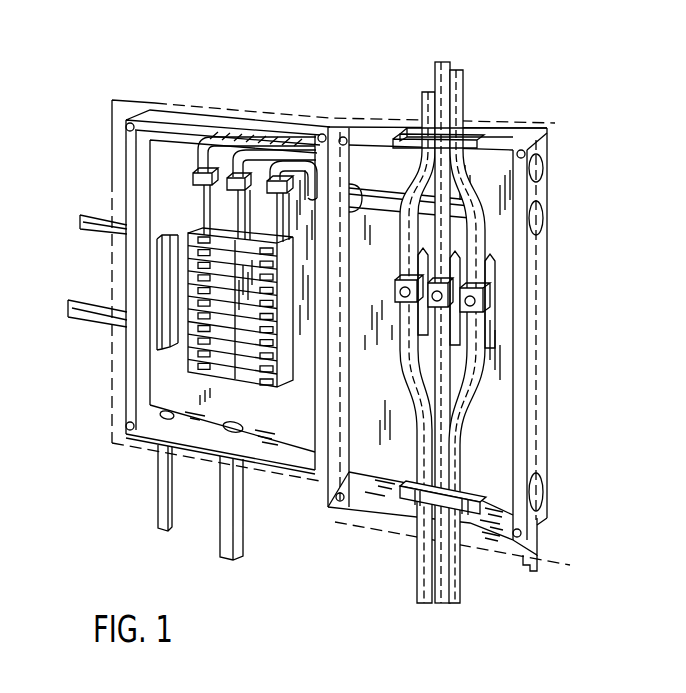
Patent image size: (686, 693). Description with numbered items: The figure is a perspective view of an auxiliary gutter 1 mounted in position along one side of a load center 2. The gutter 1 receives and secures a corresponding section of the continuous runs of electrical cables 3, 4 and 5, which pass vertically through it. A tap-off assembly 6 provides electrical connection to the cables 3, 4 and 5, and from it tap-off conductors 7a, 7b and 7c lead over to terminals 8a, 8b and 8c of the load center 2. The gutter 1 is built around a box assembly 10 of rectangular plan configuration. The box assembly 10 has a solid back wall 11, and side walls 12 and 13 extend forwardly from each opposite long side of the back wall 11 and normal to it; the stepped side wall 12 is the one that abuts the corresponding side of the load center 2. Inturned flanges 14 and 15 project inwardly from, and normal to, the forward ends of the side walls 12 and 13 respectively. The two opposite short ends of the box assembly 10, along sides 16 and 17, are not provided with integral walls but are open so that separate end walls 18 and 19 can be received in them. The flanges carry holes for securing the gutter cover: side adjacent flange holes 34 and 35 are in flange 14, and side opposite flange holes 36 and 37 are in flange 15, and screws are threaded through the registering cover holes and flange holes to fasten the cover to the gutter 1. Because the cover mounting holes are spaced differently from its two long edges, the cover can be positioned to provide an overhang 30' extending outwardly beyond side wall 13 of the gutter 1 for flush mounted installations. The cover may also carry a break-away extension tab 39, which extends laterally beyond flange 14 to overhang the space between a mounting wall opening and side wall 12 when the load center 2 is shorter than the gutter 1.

The auxiliary gutter 1 is at (556, 366).
The load center 2 is at (118, 159).
The electrical cable 3 is at (463, 87).
The electrical cable 4 is at (446, 65).
The electrical cable 5 is at (425, 92).
The tap-off assembly 6 is at (494, 289).
The tap-off conductor 7a is at (198, 152).
The tap-off conductor 7b is at (233, 160).
The tap-off conductor 7c is at (273, 165).
The terminal 8a is at (197, 185).
The terminal 8b is at (233, 190).
The terminal 8c is at (278, 197).
The box assembly 10 is at (549, 447).
The back wall 11 is at (545, 133).
The side wall 12 is at (322, 128).
The side wall 13 is at (545, 129).
The inturned flange 14 is at (330, 500).
The inturned flange 15 is at (538, 521).
The short end side 16 is at (476, 126).
The short end side 17 is at (484, 538).
The end wall 18 is at (500, 134).
The end wall 19 is at (378, 502).
The overhang 30' is at (568, 594).
The flange hole 34 is at (345, 125).
The flange hole 35 is at (338, 508).
The flange hole 36 is at (530, 174).
The flange hole 37 is at (530, 538).
The break-away extension tab 39 is at (312, 488).